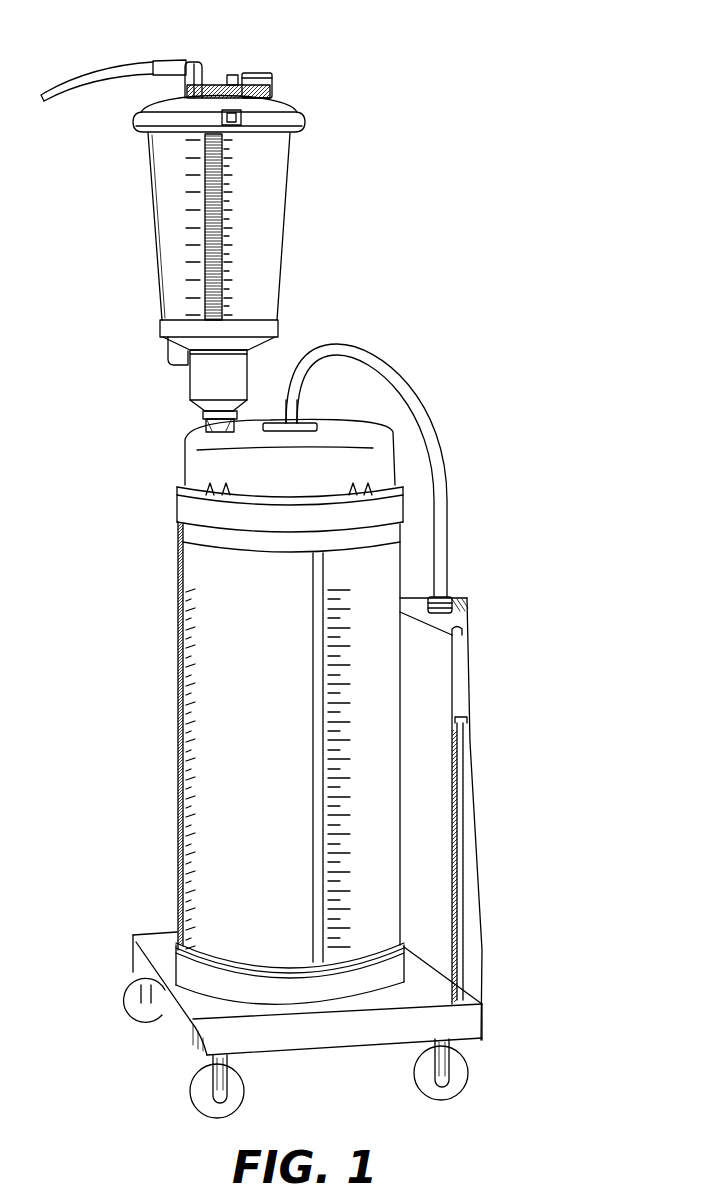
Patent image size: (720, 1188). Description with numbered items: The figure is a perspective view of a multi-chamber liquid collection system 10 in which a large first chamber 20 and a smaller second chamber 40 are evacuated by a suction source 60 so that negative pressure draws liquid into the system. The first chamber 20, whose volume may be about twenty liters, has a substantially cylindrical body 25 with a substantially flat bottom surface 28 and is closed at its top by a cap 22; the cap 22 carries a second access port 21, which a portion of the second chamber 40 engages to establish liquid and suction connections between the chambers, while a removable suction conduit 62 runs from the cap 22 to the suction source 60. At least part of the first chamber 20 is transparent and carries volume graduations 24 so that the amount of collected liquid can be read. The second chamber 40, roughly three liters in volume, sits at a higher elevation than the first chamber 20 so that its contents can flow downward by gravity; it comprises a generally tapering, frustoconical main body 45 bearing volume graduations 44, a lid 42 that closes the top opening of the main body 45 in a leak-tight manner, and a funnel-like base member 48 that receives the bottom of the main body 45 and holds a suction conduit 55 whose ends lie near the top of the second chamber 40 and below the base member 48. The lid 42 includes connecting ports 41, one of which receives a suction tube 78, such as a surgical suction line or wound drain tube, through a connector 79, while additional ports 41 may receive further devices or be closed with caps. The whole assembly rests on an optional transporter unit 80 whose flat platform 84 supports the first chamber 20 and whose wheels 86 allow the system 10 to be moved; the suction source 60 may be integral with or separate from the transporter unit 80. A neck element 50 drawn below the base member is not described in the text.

The multi-chamber liquid collection system 10 is at (487, 212).
The first chamber 20 is at (146, 697).
The second access port 21 is at (205, 425).
The cap 22 is at (205, 464).
The volume graduations 24 is at (383, 740).
The cylindrical body 25 is at (185, 778).
The flat bottom surface 28 is at (150, 993).
The second chamber 40 is at (126, 268).
The connecting ports 41 is at (257, 72).
The lid 42 is at (273, 101).
The volume graduations 44 is at (173, 168).
The main body 45 is at (270, 195).
The base member 48 is at (277, 335).
The outlet neck 50 is at (200, 372).
The suction conduit 55 is at (222, 222).
The suction source 60 is at (442, 663).
The suction conduit 62 is at (409, 388).
The suction tube 78 is at (111, 75).
The connector 79 is at (197, 60).
The transporter unit 80 is at (119, 949).
The flat platform 84 is at (196, 1009).
The wheels 86 is at (235, 1098).